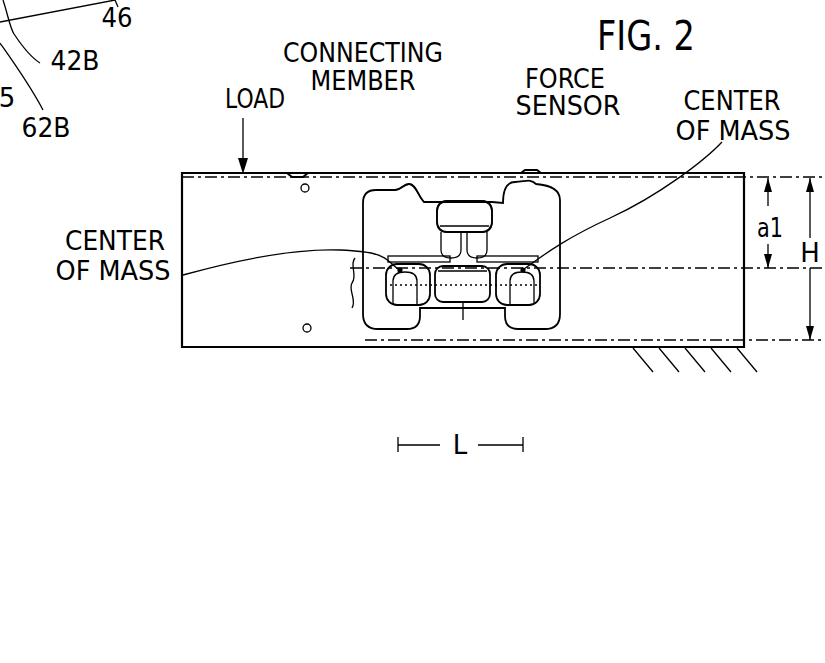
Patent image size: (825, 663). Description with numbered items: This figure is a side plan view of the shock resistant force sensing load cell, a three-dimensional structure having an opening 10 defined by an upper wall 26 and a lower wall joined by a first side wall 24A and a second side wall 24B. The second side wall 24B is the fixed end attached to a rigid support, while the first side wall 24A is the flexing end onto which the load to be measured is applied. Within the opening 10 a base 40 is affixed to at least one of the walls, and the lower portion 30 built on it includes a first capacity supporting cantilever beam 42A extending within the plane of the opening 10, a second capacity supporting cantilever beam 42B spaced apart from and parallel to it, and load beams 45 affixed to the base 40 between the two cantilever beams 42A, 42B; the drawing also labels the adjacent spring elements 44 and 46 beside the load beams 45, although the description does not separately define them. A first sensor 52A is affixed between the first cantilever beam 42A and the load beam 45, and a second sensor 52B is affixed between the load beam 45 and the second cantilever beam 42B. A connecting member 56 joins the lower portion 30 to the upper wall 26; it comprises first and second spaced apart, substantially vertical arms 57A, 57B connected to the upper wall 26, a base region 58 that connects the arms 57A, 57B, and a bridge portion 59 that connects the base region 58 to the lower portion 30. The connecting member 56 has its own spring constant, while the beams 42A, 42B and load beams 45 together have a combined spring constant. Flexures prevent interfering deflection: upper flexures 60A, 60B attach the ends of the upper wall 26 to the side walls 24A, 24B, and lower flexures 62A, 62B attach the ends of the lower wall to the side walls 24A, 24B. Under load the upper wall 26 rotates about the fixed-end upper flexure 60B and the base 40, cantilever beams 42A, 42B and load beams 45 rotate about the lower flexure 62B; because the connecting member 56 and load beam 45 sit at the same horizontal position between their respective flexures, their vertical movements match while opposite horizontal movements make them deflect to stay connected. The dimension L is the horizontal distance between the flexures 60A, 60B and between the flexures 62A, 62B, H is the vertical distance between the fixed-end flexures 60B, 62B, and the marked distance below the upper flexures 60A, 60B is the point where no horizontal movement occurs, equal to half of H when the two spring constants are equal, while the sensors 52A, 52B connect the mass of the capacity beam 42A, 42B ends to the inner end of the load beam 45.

The opening 10 is at (510, 214).
The first side wall 24A is at (222, 236).
The second side wall 24B is at (680, 246).
The upper wall 26 is at (479, 192).
The lower portion 30 is at (355, 280).
The base 40 is at (448, 202).
The first capacity supporting cantilever beam 42A is at (390, 288).
The second capacity supporting cantilever beam 42B is at (560, 278).
The left spring 44 is at (407, 295).
The load beams 45 is at (482, 302).
The right spring 46 is at (520, 300).
The first sensor 52A is at (440, 201).
The second sensor 52B is at (480, 204).
The connecting member 56 is at (424, 202).
The first vertical arm 57A is at (436, 214).
The second vertical arm 57B is at (493, 215).
The base region 58 is at (436, 236).
The bridge portion 59 is at (463, 320).
The upper flexure 60A is at (312, 177).
The upper flexure 60B is at (537, 174).
The lower flexure 62A is at (392, 303).
The lower flexure 62B is at (537, 300).